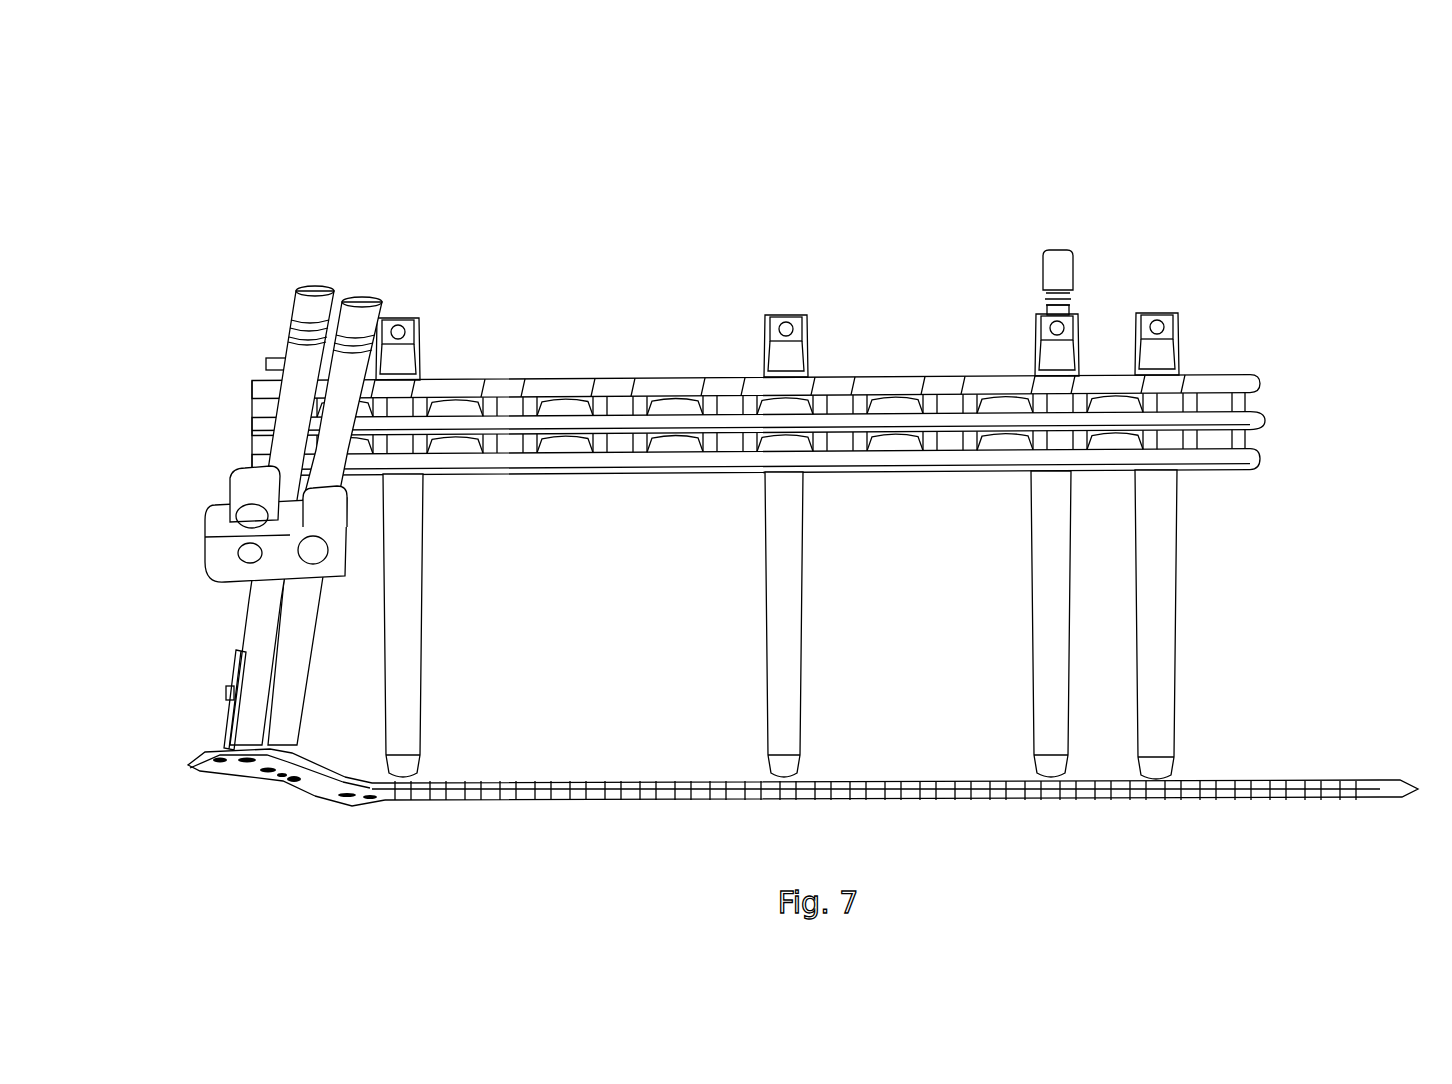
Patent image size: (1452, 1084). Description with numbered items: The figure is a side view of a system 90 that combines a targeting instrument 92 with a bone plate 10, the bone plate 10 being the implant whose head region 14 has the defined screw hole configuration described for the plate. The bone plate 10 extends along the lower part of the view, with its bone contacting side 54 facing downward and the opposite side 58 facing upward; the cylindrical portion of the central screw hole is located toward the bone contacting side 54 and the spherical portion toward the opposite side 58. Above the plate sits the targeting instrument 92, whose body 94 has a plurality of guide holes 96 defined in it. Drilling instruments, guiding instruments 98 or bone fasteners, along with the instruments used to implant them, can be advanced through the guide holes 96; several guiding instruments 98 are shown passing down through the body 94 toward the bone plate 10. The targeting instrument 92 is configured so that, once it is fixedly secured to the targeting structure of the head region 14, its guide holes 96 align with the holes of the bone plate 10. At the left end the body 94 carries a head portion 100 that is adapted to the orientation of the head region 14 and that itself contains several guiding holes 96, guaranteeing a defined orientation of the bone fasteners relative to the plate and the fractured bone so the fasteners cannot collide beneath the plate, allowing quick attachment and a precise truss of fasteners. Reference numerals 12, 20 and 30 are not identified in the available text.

The system 90 is at (1247, 193).
The targeting instrument 92 is at (880, 380).
The body 94 is at (572, 380).
The guide holes 96 is at (236, 506).
The guiding instruments 98 is at (297, 360).
The head portion 100 is at (245, 488).
The side opposite to the bone contacting side 58 is at (197, 747).
The bone plate 10 is at (1235, 780).
The plate grid section 12 is at (965, 785).
The plate tip 20 is at (1400, 782).
The bone contacting side 54 is at (367, 800).
The head region 14 is at (302, 773).
The plate slots 30 is at (295, 773).